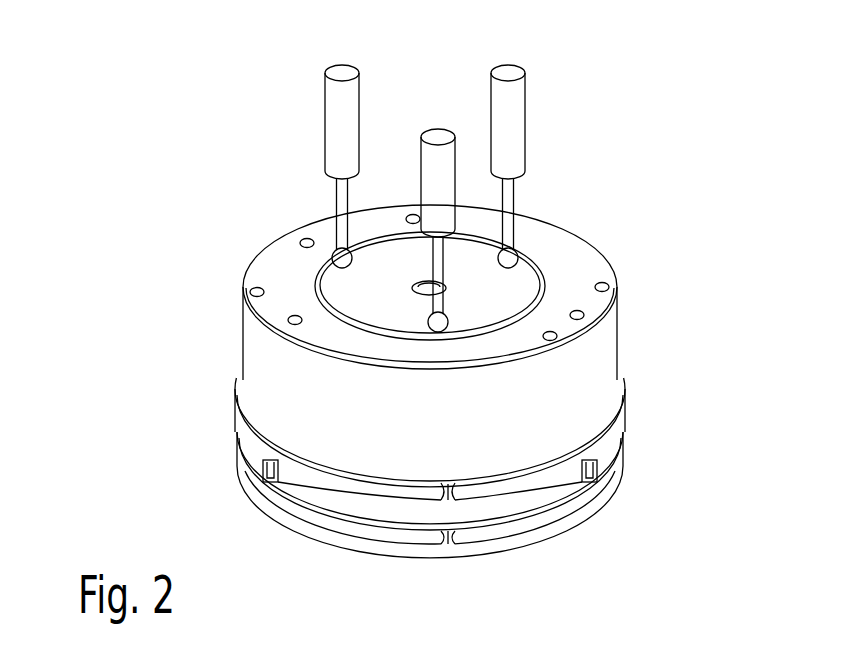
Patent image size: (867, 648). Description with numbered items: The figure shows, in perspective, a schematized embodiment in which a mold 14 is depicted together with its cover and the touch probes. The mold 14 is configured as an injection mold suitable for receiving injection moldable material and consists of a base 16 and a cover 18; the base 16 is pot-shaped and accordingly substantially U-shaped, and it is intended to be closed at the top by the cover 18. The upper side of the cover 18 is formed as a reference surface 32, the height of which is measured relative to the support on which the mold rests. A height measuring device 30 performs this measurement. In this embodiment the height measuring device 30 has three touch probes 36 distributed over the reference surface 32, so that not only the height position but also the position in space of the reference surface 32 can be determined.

The mold 14 is at (489, 498).
The base 16 is at (505, 540).
The cover 18 is at (595, 360).
The height measuring device 30 is at (457, 174).
The reference surface 32 is at (556, 252).
The touch probe 36 is at (347, 95).